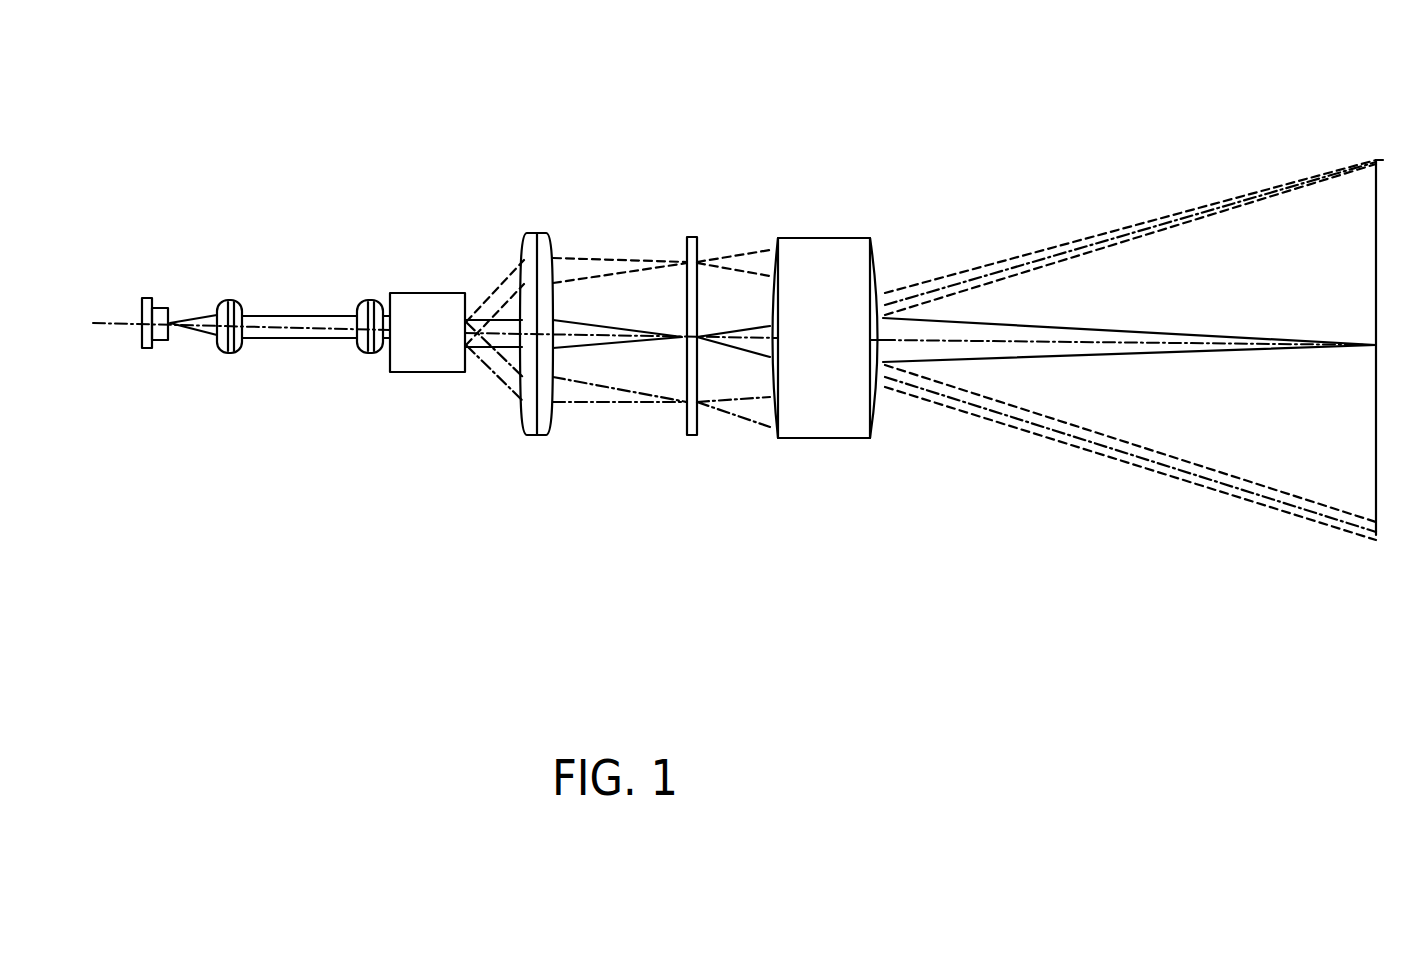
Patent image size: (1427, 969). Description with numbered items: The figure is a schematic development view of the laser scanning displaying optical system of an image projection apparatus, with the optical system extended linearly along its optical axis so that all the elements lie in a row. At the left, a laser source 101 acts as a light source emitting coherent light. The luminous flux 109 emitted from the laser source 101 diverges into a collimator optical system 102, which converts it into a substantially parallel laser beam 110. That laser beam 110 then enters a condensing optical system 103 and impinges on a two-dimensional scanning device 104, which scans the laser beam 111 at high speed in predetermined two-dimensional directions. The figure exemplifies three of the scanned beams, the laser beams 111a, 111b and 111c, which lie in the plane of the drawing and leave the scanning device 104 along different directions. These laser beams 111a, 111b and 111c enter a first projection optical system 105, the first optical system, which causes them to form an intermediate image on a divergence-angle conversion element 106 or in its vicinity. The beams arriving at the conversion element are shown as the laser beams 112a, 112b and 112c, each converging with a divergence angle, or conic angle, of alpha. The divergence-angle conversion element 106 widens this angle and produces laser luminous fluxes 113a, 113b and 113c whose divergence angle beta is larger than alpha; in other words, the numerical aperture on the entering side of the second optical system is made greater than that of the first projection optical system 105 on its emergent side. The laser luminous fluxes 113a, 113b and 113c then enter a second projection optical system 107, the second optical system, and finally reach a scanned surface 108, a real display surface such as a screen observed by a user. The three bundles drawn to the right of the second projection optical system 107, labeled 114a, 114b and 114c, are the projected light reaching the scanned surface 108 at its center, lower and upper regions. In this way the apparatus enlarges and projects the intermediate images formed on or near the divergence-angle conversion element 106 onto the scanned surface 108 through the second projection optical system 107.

The laser source 101 is at (146, 297).
The collimator optical system 102 is at (238, 299).
The condensing optical system 103 is at (364, 299).
The two-dimensional scanning device 104 is at (420, 305).
The first projection optical system 105 is at (524, 290).
The divergence-angle conversion element 106 is at (687, 262).
The second projection optical system 107 is at (808, 282).
The scanned surface 108 is at (1384, 257).
The luminous flux 109 is at (195, 335).
The laser beam 110 is at (297, 333).
The laser beam 111 is at (446, 258).
The laser beam 111a is at (493, 356).
The laser beam 111b is at (463, 335).
The laser beam 111c is at (503, 362).
The laser beam 112a is at (628, 318).
The laser beam 112b is at (603, 277).
The laser beam 112c is at (640, 403).
The laser luminous flux 113a is at (690, 435).
The laser luminous flux 113b is at (772, 85).
The laser luminous flux 113c is at (755, 427).
The projected beam (center) 114a is at (1061, 333).
The projected beam (lower) 114b is at (1115, 446).
The projected beam (upper) 114c is at (1059, 249).